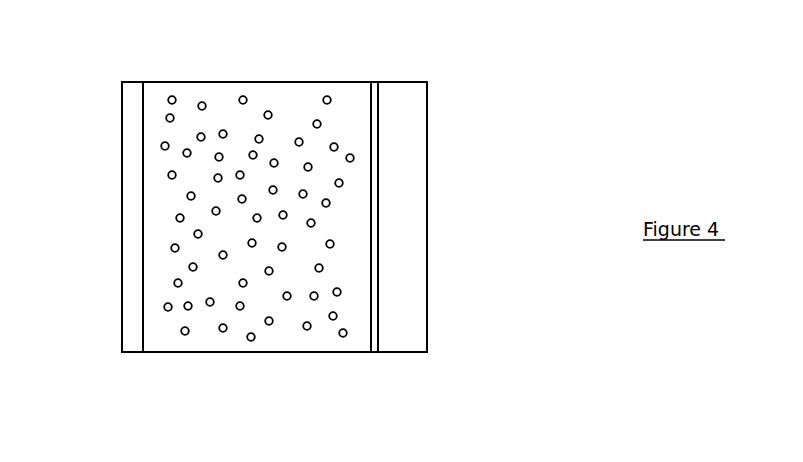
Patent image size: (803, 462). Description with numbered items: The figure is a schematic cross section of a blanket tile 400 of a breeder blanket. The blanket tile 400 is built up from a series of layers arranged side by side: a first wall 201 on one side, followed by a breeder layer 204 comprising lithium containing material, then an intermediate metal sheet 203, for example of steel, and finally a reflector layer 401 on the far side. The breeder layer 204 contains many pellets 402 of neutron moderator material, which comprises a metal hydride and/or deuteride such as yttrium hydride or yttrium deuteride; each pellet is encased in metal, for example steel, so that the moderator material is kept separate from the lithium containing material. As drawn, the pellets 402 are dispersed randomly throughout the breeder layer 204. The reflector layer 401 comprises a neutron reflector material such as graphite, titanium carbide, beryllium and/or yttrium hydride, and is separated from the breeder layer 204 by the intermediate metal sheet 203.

The blanket tile 400 is at (94, 64).
The first wall 201 is at (130, 342).
The intermediate metal sheet 203 is at (374, 120).
The breeder layer 204 is at (272, 338).
The reflector layer 401 is at (402, 168).
The pellets 402 is at (187, 335).